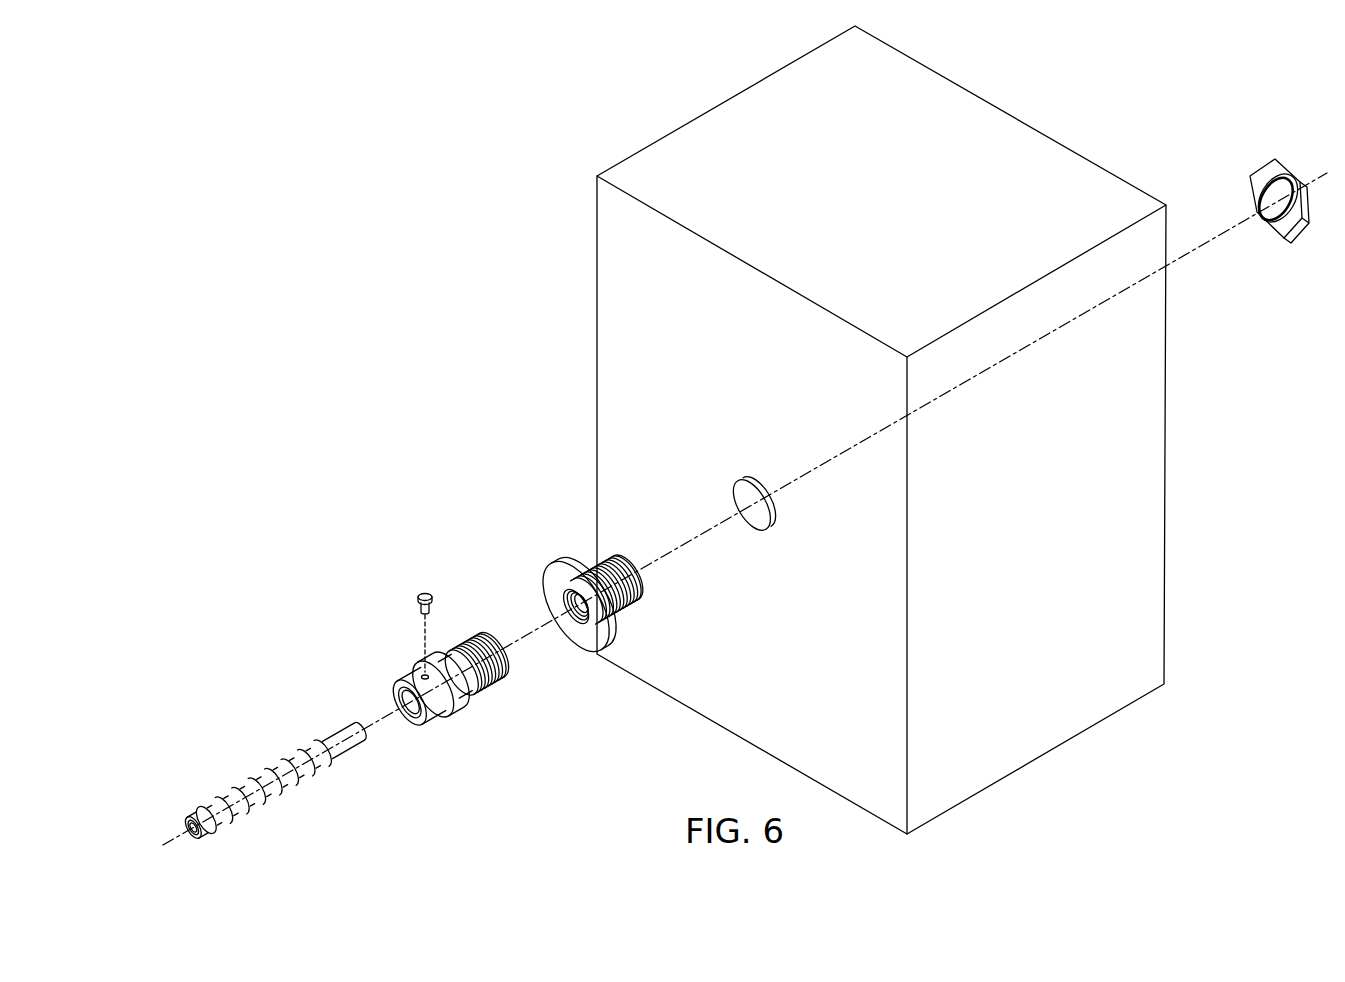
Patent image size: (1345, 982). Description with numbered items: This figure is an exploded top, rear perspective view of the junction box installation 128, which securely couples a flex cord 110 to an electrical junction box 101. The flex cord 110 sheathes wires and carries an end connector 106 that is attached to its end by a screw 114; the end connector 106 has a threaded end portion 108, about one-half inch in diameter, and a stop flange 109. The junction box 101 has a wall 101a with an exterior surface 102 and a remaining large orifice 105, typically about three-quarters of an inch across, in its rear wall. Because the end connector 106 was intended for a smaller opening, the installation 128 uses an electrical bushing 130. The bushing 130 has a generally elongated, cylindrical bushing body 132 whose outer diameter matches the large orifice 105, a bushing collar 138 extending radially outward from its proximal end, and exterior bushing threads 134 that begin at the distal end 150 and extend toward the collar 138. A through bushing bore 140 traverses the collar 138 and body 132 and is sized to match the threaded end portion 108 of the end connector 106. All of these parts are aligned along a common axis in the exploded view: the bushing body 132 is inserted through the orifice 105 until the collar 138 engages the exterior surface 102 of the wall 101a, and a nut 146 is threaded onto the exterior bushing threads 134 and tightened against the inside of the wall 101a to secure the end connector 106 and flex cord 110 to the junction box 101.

The electrical junction box 101 is at (801, 430).
The wall 101a is at (607, 317).
The exterior surface 102 is at (607, 353).
The large orifice 105 is at (731, 503).
The end connector 106 is at (430, 691).
The threaded end portion 108 is at (456, 683).
The stop flange 109 is at (440, 684).
The flex cord 110 is at (287, 762).
The screw 114 is at (423, 588).
The junction box installation 128 is at (584, 538).
The electrical bushing 130 is at (579, 605).
The bushing body 132 is at (610, 587).
The exterior bushing threads 134 is at (600, 593).
The bushing collar 138 is at (590, 598).
The bushing bore 140 is at (576, 606).
The nut 146 is at (1257, 168).
The distal end 150 is at (622, 580).